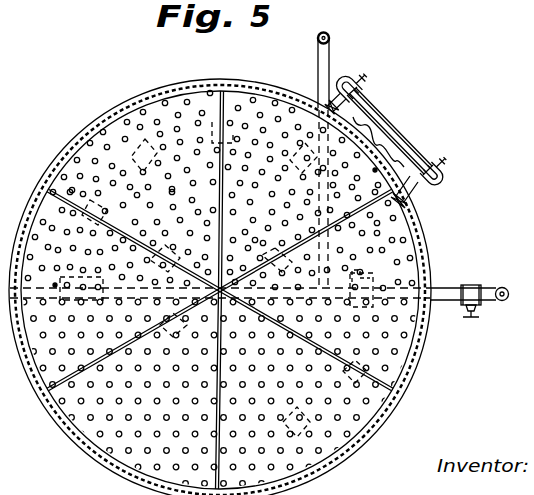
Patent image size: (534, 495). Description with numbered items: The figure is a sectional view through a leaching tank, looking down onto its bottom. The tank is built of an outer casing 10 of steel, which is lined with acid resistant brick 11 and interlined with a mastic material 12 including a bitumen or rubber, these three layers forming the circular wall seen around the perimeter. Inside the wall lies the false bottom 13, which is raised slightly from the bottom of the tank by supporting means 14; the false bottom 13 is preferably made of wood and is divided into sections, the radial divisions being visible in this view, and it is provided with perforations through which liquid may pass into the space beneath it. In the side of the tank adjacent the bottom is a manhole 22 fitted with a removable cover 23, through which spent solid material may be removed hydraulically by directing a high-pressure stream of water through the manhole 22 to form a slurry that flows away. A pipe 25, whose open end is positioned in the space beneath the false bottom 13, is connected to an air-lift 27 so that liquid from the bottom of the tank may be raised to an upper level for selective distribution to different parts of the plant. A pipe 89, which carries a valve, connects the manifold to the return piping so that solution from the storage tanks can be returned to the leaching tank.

The outer casing 10 is at (65, 147).
The acid resistant brick 11 is at (105, 134).
The mastic material 12 is at (146, 101).
The false bottom 13 is at (211, 95).
The supporting means 14 is at (88, 289).
The manhole 22 is at (341, 83).
The removable cover 23 is at (404, 139).
The pipe 25 is at (445, 302).
The air-lift 27 is at (489, 287).
The pipe 89 is at (318, 57).